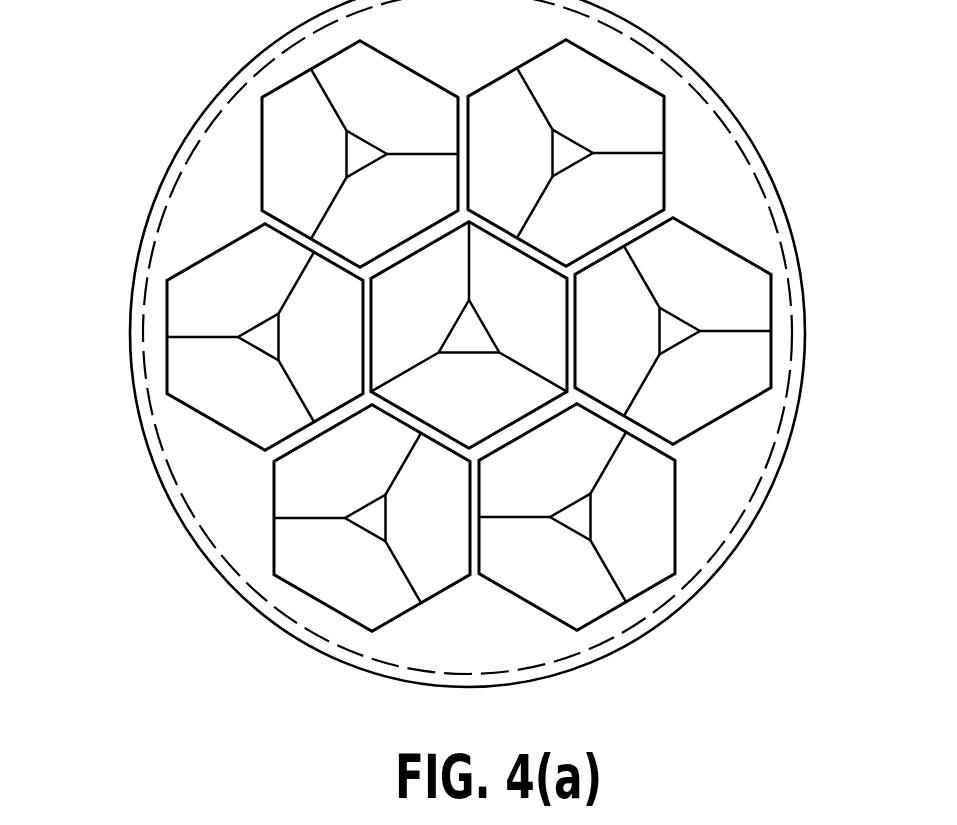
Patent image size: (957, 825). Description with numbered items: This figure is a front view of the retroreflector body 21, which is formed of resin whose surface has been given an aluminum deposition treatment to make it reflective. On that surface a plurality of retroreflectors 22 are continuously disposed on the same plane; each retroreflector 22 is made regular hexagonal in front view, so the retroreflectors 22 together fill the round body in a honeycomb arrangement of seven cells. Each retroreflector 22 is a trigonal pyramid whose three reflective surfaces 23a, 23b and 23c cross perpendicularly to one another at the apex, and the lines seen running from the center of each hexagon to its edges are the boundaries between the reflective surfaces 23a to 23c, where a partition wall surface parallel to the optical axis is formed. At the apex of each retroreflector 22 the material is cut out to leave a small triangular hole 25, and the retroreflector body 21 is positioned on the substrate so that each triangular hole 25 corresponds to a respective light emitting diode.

The retroreflector body 21 is at (694, 66).
The retroreflector 22 is at (442, 573).
The reflective surface 23a is at (227, 410).
The reflective surface 23b is at (307, 335).
The reflective surface 23c is at (207, 293).
The triangular hole 25 is at (675, 328).